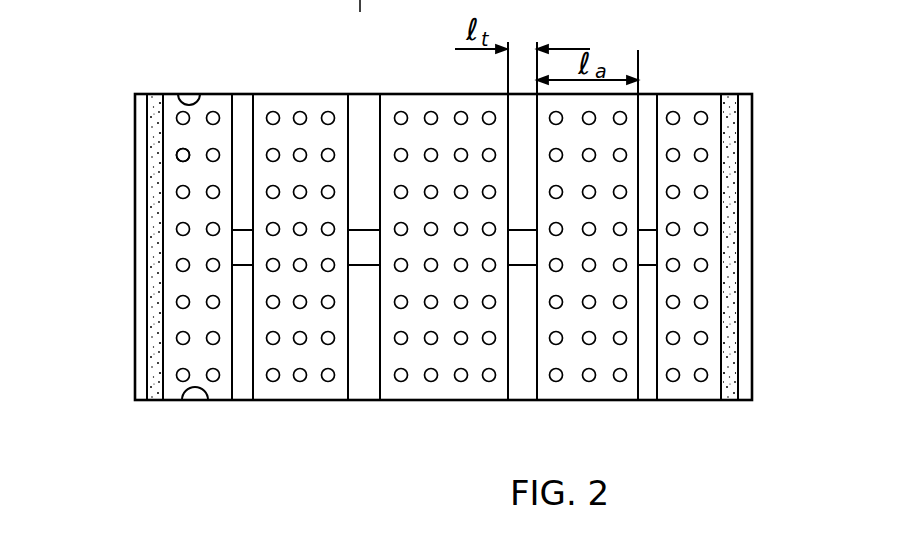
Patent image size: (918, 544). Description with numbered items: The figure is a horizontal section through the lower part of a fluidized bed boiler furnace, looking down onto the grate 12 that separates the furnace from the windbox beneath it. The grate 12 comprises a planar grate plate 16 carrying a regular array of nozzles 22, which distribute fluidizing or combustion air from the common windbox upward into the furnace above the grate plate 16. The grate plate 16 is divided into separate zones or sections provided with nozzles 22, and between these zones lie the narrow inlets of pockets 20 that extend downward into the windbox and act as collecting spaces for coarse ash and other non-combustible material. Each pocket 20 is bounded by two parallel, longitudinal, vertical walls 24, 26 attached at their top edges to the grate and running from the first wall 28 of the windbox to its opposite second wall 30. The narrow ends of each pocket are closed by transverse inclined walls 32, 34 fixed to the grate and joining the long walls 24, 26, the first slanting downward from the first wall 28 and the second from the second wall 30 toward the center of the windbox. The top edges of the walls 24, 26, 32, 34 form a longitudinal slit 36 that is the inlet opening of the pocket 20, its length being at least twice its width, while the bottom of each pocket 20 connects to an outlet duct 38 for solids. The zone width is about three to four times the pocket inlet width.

The grate 12 is at (100, 279).
The grate plate 16 is at (226, 392).
The pocket 20 is at (240, 202).
The nozzle 22 is at (178, 157).
The longitudinal vertical wall 24 is at (638, 347).
The longitudinal vertical wall 26 is at (660, 355).
The first wall of windbox 28 is at (197, 94).
The second wall of windbox 30 is at (207, 400).
The transverse inclined wall 32 is at (650, 143).
The transverse inclined wall 34 is at (648, 320).
The slit 36 is at (650, 215).
The outlet duct 38 is at (650, 252).